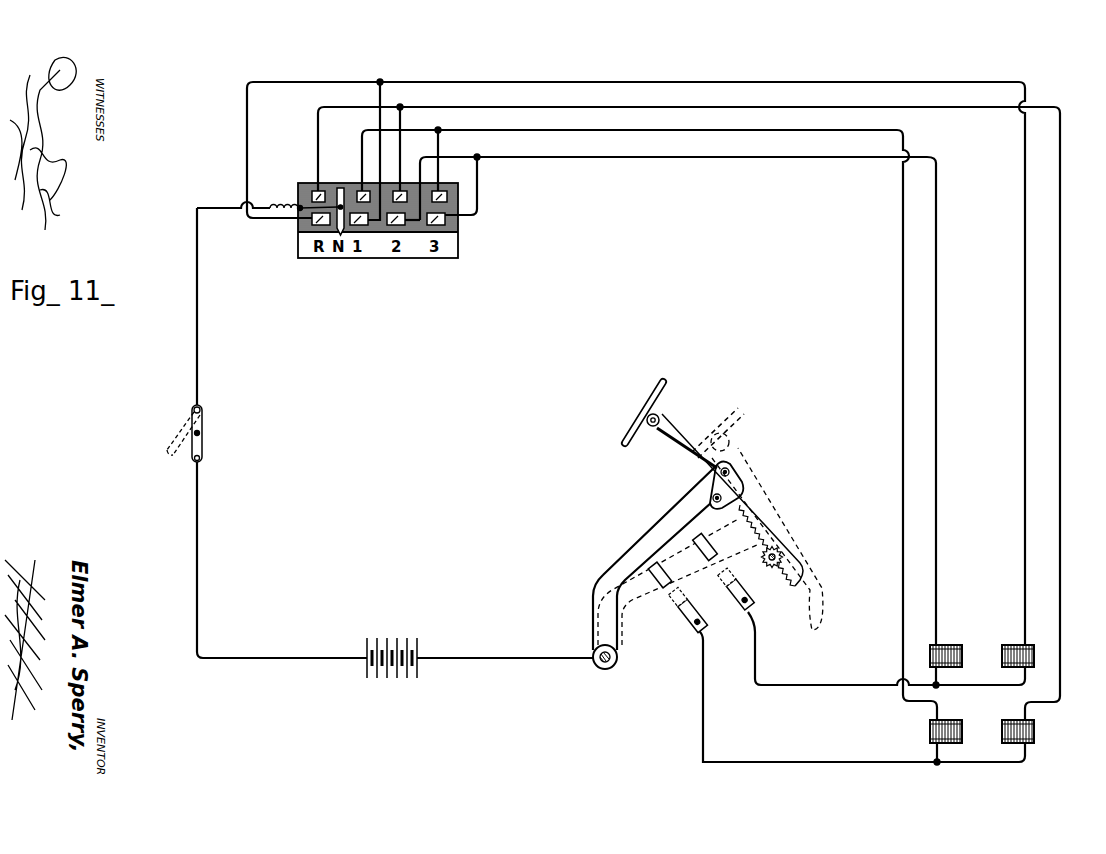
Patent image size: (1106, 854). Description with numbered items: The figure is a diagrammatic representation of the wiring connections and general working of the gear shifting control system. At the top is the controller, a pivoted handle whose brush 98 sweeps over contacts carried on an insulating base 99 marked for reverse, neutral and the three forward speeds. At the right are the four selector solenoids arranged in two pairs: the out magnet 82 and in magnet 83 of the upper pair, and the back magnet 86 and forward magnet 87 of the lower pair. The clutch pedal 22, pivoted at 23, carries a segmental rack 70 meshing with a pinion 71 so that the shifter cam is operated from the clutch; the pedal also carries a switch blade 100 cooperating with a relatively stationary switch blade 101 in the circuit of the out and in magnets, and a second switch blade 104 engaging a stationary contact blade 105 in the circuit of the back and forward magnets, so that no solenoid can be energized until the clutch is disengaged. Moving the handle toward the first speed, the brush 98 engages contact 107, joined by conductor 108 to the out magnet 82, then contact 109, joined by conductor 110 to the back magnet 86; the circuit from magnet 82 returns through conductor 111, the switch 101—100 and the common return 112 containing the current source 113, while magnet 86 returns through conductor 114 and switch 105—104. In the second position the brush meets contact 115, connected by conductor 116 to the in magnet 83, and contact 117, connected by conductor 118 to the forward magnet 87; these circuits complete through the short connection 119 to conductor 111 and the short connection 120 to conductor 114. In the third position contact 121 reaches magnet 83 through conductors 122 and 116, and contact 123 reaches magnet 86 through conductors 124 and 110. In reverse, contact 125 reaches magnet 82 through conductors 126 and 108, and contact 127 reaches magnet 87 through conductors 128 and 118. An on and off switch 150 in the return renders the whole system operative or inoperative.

The pedal 22 is at (645, 410).
The pedal pivot 23 is at (604, 668).
The segmental rack 70 is at (776, 526).
The pinion 71 is at (778, 565).
The out magnet 82 is at (1013, 644).
The in magnet 83 is at (947, 644).
The back magnet 86 is at (929, 731).
The forward magnet 87 is at (1036, 731).
The brush 98 is at (340, 186).
The insulating base 99 is at (356, 183).
The switch blade 100 is at (712, 548).
The stationary switch blade 101 is at (750, 584).
The second switch blade 104 is at (658, 587).
The stationary contact blade 105 is at (680, 612).
The contact 107 is at (362, 226).
The conductor 108 is at (377, 94).
The contact 109 is at (368, 196).
The conductor 110 is at (567, 127).
The conductor 111 is at (836, 684).
The common return 112 is at (488, 657).
The current source 113 is at (392, 642).
The conductor 114 is at (760, 763).
The contact 115 is at (398, 226).
The conductor 116 is at (580, 157).
The contact 117 is at (410, 188).
The conductor 118 is at (636, 107).
The short connection 119 is at (940, 672).
The short connection 120 is at (985, 763).
The contact 121 is at (450, 228).
The conductor 122 is at (480, 208).
The contact 123 is at (447, 197).
The conductor 124 is at (440, 142).
The contact 125 is at (312, 224).
The conductor 126 is at (247, 142).
The contact 127 is at (312, 192).
The conductor 128 is at (318, 136).
The on and off switch 150 is at (204, 441).